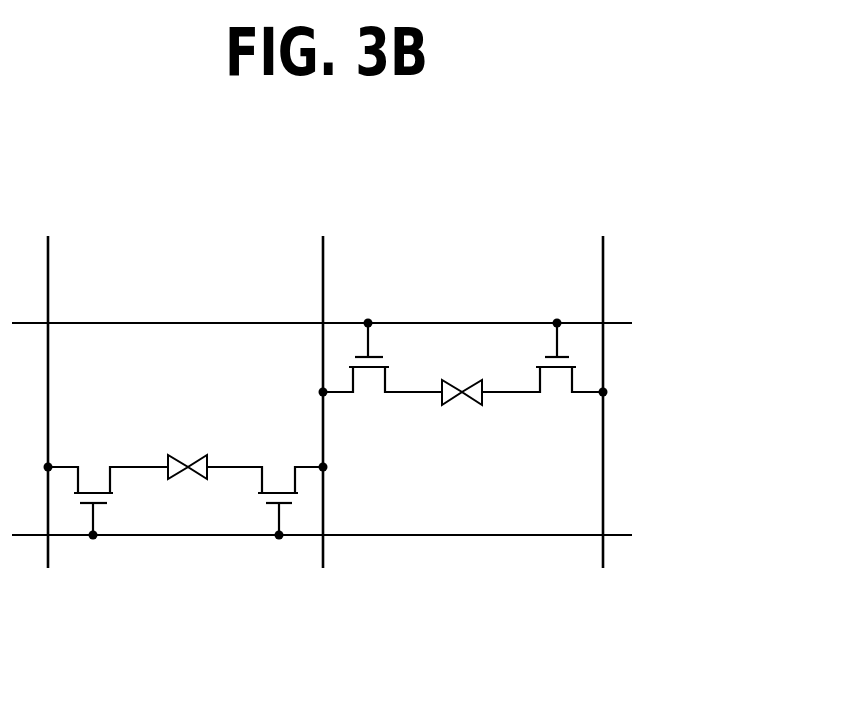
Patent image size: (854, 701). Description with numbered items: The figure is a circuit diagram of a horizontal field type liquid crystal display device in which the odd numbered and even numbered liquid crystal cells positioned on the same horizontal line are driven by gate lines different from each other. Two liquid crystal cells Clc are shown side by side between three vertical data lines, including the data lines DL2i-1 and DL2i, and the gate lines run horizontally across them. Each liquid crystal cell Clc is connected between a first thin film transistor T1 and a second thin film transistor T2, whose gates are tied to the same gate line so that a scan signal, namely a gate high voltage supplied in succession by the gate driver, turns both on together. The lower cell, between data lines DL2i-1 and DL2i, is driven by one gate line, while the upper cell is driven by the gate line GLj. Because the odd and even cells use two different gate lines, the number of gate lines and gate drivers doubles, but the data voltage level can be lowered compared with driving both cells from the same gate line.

The first thin film transistor T1 is at (325, 429).
The second thin film transistor T2 is at (323, 429).
The liquid crystal cell Clc is at (326, 430).
The data line DL2i-1 is at (105, 402).
The data line DL2i is at (370, 402).
The gate line GLj is at (351, 326).